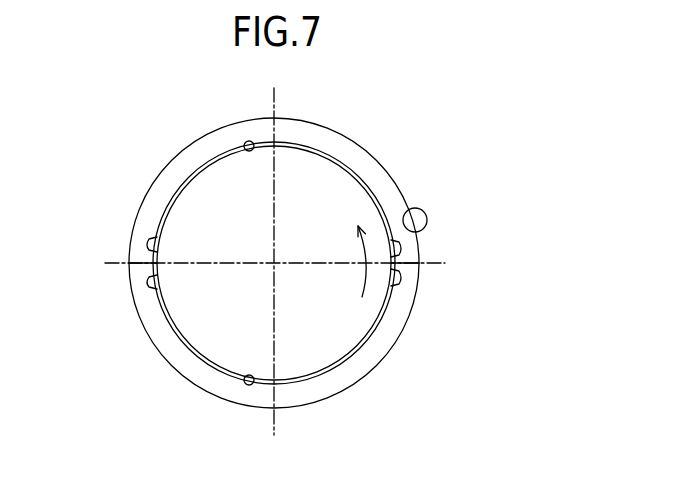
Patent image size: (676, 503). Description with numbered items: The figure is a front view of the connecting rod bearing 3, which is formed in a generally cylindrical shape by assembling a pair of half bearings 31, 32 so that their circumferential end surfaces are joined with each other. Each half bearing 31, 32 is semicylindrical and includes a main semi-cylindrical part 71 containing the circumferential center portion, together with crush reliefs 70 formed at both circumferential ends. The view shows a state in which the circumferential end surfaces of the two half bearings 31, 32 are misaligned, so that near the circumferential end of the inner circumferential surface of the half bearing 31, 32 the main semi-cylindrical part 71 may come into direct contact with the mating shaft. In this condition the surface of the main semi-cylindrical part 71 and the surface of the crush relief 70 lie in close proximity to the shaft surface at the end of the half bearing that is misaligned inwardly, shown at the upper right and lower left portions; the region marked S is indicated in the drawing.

The connecting rod bearing 3 is at (276, 267).
The half bearing 31 is at (303, 125).
The half bearing 32 is at (302, 402).
The crush relief 70 is at (150, 241).
The main semi-cylindrical part 71 is at (245, 142).
The gap portion S is at (425, 213).